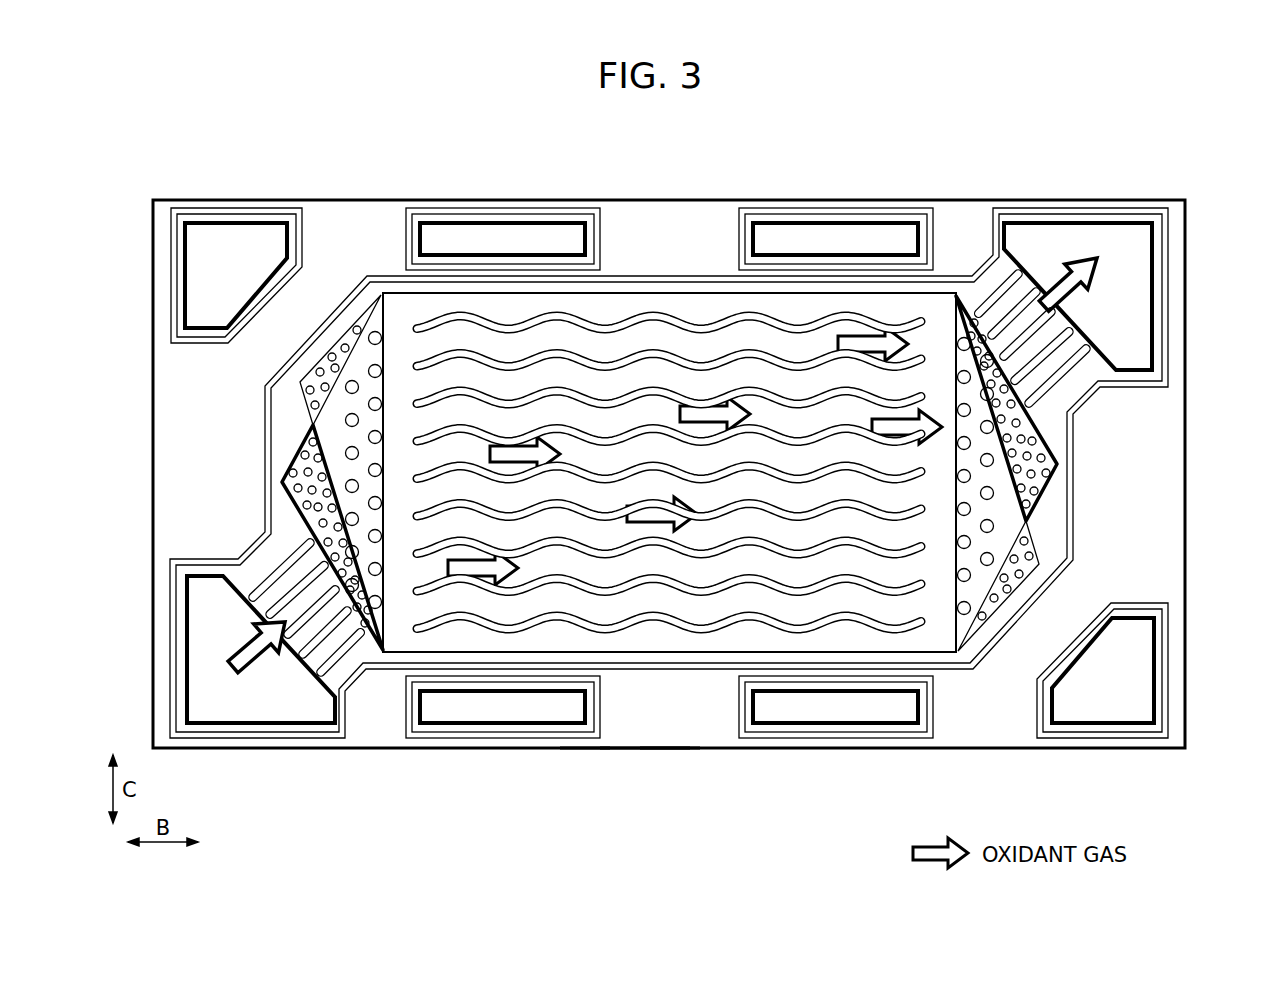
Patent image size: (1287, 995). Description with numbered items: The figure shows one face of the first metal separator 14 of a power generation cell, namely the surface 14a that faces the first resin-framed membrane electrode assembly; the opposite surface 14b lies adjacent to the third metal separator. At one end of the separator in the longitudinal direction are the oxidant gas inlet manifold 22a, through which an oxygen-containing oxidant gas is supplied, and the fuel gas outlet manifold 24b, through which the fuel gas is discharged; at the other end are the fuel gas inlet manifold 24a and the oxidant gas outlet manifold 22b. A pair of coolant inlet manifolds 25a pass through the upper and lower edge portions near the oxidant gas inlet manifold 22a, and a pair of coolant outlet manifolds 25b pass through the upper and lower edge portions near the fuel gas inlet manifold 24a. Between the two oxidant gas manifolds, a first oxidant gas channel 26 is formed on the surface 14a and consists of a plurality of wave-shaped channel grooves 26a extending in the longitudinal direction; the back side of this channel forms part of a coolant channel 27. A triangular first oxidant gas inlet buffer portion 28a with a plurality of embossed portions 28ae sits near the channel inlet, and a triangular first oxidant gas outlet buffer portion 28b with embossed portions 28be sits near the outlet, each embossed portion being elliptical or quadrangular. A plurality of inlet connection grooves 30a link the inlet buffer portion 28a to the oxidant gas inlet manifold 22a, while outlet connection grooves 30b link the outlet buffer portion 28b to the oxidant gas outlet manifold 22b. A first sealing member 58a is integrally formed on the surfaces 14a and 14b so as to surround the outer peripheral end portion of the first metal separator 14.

The first metal separator 14 is at (336, 144).
The surface 14a is at (645, 749).
The surface 14b is at (668, 749).
The oxidant gas inlet manifold 22a is at (220, 692).
The oxidant gas outlet manifold 22b is at (1072, 238).
The fuel gas inlet manifold 24a is at (1099, 697).
The fuel gas outlet manifold 24b is at (215, 238).
The coolant inlet manifolds 25a is at (492, 240).
The coolant outlet manifolds 25b is at (826, 240).
The first oxidant gas channel 26 is at (613, 311).
The wave-shaped channel grooves 26a is at (668, 398).
The coolant channel 27 is at (707, 593).
The first oxidant gas inlet buffer portion 28a is at (303, 498).
The embossed portions 28ae is at (347, 452).
The first oxidant gas outlet buffer portion 28b is at (1040, 447).
The embossed portions 28be is at (995, 495).
The inlet connection grooves 30a is at (335, 638).
The outlet connection grooves 30b is at (997, 313).
The first sealing member 58a is at (585, 749).